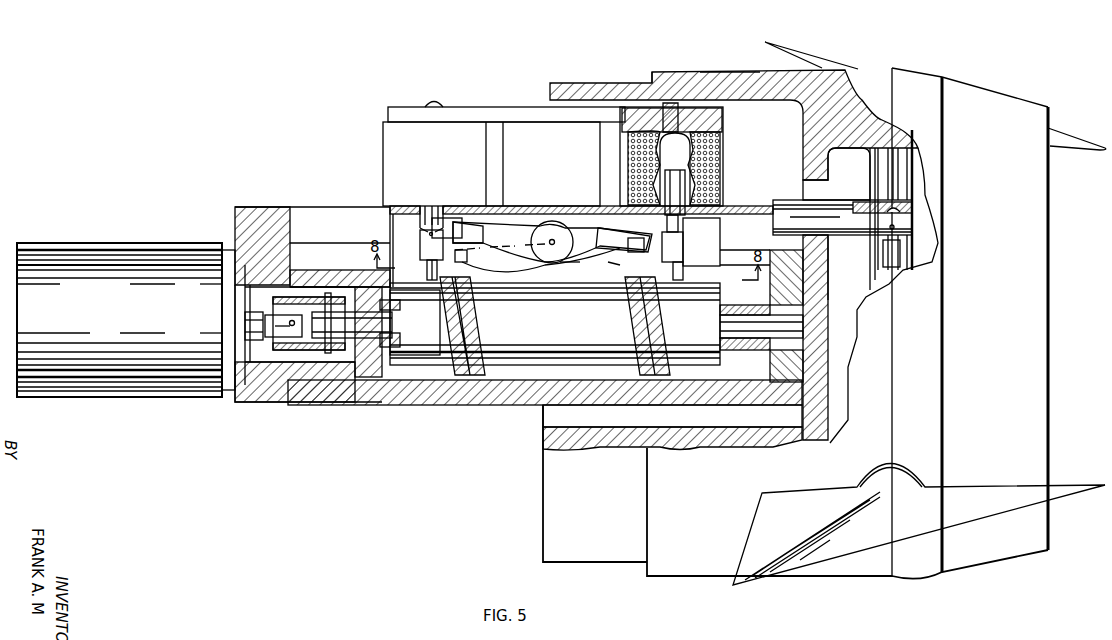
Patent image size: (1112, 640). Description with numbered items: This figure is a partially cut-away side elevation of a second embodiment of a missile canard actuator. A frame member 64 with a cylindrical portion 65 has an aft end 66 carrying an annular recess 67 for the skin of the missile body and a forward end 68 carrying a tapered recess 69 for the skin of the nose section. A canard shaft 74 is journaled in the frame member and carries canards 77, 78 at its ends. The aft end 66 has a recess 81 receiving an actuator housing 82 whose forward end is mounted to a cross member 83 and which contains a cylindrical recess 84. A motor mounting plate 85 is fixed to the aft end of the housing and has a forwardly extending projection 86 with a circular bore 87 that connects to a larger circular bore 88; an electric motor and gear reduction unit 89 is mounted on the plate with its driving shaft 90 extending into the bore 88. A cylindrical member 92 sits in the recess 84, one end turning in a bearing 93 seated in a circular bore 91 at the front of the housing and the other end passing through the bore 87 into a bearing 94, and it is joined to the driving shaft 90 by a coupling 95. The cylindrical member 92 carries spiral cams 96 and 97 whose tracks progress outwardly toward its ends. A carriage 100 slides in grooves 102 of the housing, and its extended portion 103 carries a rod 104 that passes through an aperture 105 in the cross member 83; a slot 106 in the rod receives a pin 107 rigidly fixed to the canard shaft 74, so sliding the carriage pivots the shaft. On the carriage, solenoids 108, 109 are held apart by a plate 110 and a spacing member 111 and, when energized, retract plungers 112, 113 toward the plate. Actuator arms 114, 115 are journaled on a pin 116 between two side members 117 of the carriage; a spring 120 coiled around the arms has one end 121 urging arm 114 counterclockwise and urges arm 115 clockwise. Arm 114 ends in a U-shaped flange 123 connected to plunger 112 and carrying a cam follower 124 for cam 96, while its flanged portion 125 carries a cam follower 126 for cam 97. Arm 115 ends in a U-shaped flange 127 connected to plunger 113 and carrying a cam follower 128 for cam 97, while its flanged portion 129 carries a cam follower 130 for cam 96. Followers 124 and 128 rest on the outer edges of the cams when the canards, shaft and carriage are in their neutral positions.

The frame member 64 is at (735, 70).
The cylindrical portion 65 is at (660, 72).
The aft end 66 is at (543, 492).
The recess 67 is at (572, 85).
The forward end 68 is at (1050, 272).
The tapered recess 69 is at (995, 96).
The canard shaft 74 is at (880, 273).
The canard 77 is at (745, 586).
The canard 78 is at (820, 52).
The recess 81 is at (545, 422).
The actuator housing 82 is at (428, 395).
The cross member 83 is at (810, 322).
The cylindrical recess 84 is at (386, 372).
The motor mounting plate 85 is at (252, 207).
The forwardly extending projection 86 is at (318, 280).
The circular bore 87 is at (362, 352).
The larger circular bore 88 is at (246, 395).
The electric motor and gear reduction unit 89 is at (126, 320).
The driving shaft 90 is at (235, 385).
The circular bore 91 is at (768, 364).
The cylindrical member 92 is at (555, 324).
The bearing 93 is at (770, 355).
The bearing 94 is at (372, 362).
The coupling 95 is at (290, 350).
The spiral cam 96 is at (470, 298).
The spiral cam 97 is at (628, 300).
The carriage 100 is at (505, 214).
The grooves 102 is at (314, 238).
The extended portion 103 is at (733, 210).
The rod 104 is at (842, 217).
The aperture 105 is at (835, 163).
The slot 106 is at (875, 196).
The pin 107 is at (895, 267).
The solenoid 108 is at (491, 164).
The solenoid 109 is at (723, 148).
The plate 110 is at (506, 113).
The spacing member 111 is at (527, 164).
The plunger 112 is at (432, 208).
The plunger 113 is at (672, 195).
The actuator arm 114 is at (624, 240).
The actuator arm 115 is at (482, 232).
The pin 116 is at (553, 240).
The side members 117 is at (415, 250).
The spring 120 is at (570, 262).
The one end of the spring 121 is at (616, 250).
The U-shaped flange 123 is at (422, 246).
The cam follower 124 is at (433, 290).
The flanged portion 125 is at (632, 235).
The cam follower 126 is at (614, 267).
The U-shaped flange 127 is at (683, 243).
The cam follower 128 is at (684, 278).
The flanged portion 129 is at (468, 218).
The cam follower 130 is at (467, 260).